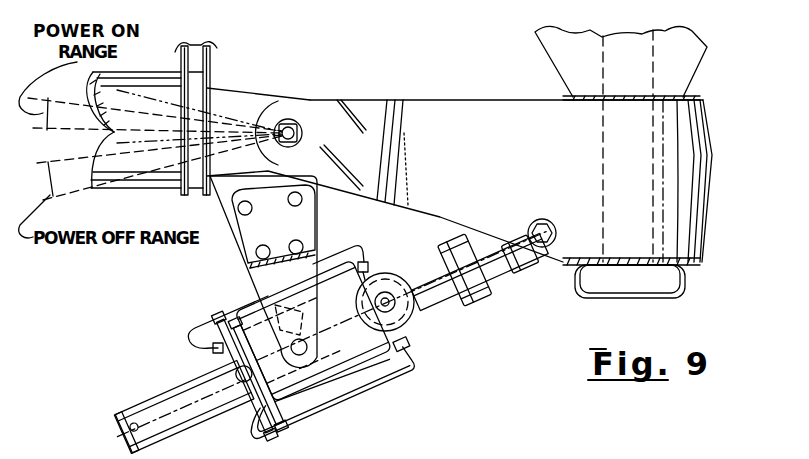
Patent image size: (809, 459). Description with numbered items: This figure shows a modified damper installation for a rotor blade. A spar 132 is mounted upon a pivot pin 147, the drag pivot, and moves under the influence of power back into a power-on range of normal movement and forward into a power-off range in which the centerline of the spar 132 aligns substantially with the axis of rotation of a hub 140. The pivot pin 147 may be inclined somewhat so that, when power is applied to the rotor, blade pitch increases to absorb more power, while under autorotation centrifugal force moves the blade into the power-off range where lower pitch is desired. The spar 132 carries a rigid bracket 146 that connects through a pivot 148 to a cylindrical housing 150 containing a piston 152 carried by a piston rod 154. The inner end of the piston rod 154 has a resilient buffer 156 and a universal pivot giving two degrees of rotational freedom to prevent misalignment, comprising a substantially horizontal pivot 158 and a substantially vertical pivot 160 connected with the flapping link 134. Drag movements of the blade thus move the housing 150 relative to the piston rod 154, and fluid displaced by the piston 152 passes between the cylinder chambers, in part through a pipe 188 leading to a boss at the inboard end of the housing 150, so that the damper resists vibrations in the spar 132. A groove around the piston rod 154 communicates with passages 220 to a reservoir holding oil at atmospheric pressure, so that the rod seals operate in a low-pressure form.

The spar 132 is at (152, 130).
The flapping link 134 is at (514, 171).
The hub 140 is at (683, 62).
The rigid bracket 146 is at (305, 230).
The pivot pin 147 is at (294, 128).
The pivot 148 is at (302, 356).
The cylindrical housing 150 is at (362, 362).
The piston 152 is at (280, 303).
The piston rod 154 is at (440, 290).
The resilient buffer 156 is at (478, 293).
The horizontal pivot 158 is at (535, 260).
The vertical pivot 160 is at (548, 215).
The pipe 188 is at (255, 428).
The passages 220 is at (353, 248).